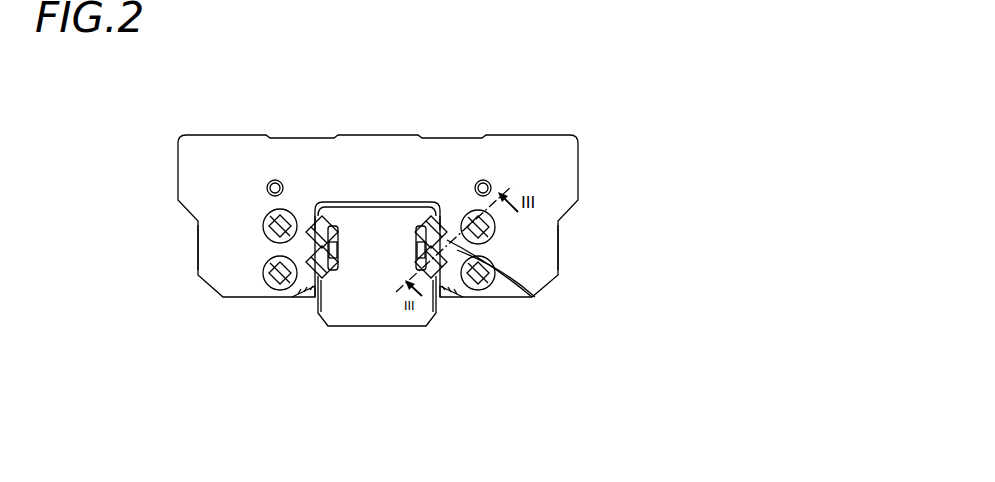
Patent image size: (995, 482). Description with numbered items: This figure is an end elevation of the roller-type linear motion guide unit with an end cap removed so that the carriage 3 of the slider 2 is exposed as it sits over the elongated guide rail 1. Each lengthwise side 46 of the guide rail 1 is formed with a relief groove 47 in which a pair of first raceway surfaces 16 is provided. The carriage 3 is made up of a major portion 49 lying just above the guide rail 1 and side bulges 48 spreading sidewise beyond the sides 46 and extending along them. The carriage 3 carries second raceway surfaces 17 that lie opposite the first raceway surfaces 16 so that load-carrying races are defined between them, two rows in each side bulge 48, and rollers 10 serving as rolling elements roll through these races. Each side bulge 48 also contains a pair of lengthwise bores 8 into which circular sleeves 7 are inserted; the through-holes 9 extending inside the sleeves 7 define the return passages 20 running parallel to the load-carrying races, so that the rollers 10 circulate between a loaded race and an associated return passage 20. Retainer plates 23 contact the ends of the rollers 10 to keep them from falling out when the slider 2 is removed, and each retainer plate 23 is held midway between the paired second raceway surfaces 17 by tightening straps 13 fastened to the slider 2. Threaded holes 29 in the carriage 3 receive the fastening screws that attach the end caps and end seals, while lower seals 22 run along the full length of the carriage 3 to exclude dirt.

The guide rail 1 is at (373, 292).
The slider 2 is at (519, 128).
The carriage 3 is at (561, 153).
The circular sleeve 7 is at (265, 231).
The lengthwise bore 8 is at (268, 216).
The through-hole 9 is at (266, 226).
The roller 10 is at (322, 216).
The tightening strap 13 is at (392, 300).
The first raceway surface 16 is at (459, 298).
The second raceway surface 17 is at (427, 208).
The return passage 20 is at (318, 214).
The lower seal 22 is at (329, 262).
The retainer plate 23 is at (421, 212).
The threaded hole 29 is at (272, 180).
The lengthwise side 46 is at (452, 300).
The relief groove 47 is at (335, 203).
The side bulge 48 is at (223, 248).
The major portion 49 is at (373, 163).